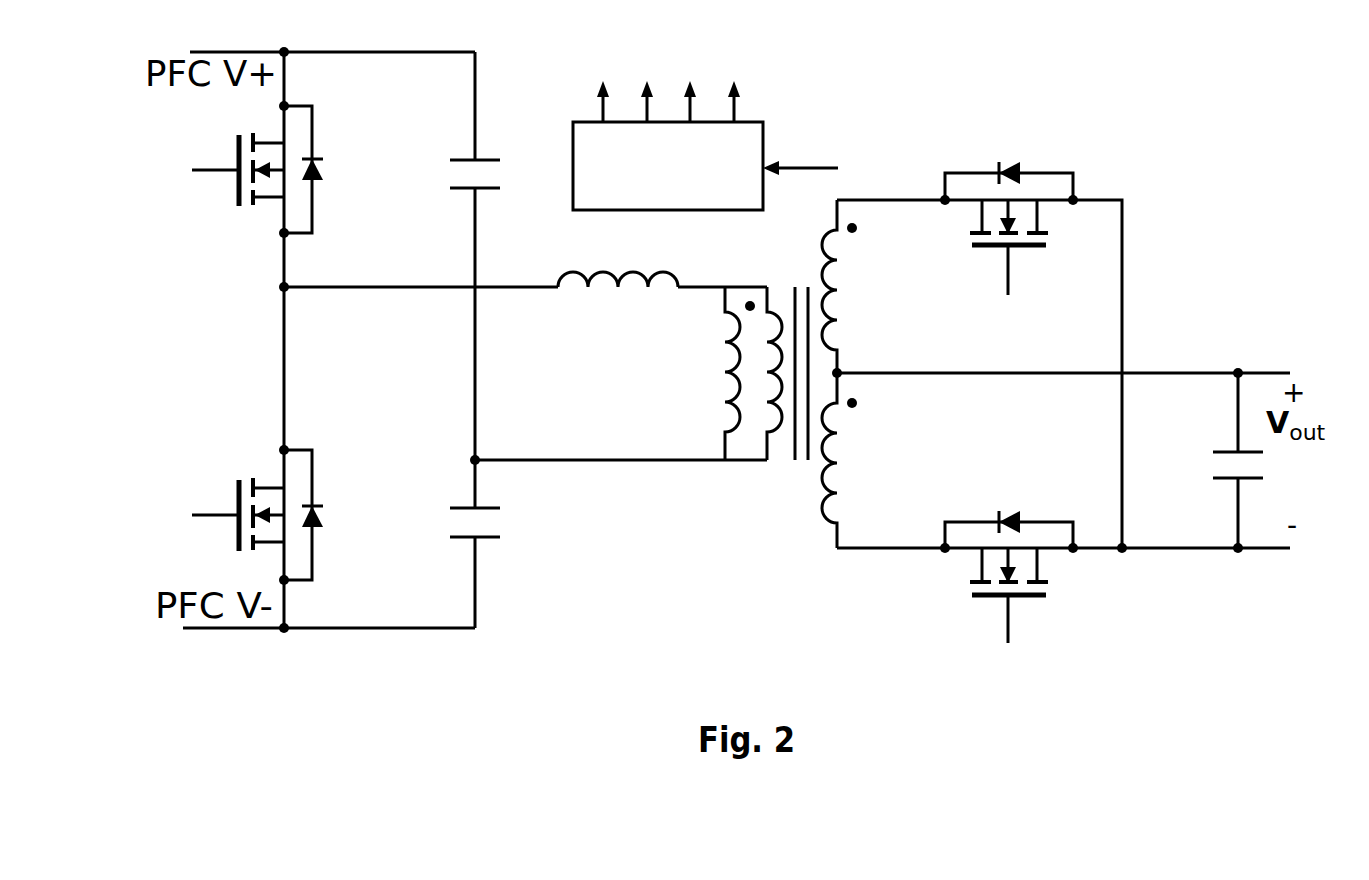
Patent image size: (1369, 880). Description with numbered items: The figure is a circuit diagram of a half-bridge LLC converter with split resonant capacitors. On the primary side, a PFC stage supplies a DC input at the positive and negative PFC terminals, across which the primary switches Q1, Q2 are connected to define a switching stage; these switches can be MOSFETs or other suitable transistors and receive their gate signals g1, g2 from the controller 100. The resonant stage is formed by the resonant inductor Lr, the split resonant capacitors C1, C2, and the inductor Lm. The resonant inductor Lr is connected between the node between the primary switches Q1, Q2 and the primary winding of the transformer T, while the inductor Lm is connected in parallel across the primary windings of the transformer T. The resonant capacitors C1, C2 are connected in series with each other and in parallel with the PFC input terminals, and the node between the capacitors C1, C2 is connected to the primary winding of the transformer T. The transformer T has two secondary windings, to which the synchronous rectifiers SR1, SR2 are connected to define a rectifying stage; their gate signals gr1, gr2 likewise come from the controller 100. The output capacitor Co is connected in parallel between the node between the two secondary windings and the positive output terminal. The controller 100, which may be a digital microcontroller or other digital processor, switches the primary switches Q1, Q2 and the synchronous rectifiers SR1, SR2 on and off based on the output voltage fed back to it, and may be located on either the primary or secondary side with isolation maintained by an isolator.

The controller 100 is at (573, 134).
The primary switch Q1 is at (299, 157).
The primary switch Q2 is at (299, 503).
The gate signal of first primary switch g1 is at (215, 146).
The gate signal of second primary switch g2 is at (215, 491).
The resonant capacitor C1 is at (498, 256).
The resonant capacitor C2 is at (497, 544).
The resonant inductor Lr is at (618, 259).
The inductor Lm is at (706, 373).
The transformer T is at (801, 374).
The synchronous rectifier SR1 is at (980, 192).
The synchronous rectifier SR2 is at (980, 540).
The gate signal of first synchronous rectifier gr1 is at (985, 270).
The gate signal of second synchronous rectifier gr2 is at (985, 619).
The output capacitor Co is at (1225, 460).